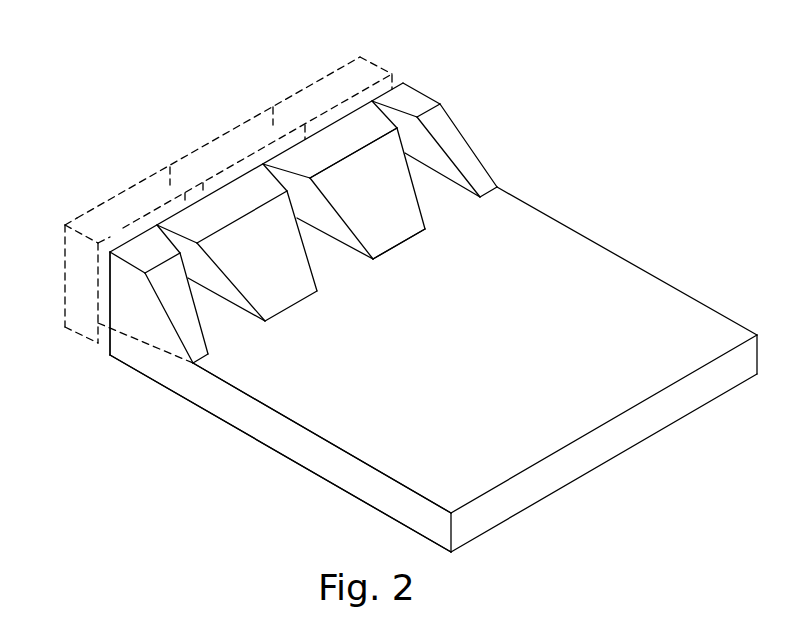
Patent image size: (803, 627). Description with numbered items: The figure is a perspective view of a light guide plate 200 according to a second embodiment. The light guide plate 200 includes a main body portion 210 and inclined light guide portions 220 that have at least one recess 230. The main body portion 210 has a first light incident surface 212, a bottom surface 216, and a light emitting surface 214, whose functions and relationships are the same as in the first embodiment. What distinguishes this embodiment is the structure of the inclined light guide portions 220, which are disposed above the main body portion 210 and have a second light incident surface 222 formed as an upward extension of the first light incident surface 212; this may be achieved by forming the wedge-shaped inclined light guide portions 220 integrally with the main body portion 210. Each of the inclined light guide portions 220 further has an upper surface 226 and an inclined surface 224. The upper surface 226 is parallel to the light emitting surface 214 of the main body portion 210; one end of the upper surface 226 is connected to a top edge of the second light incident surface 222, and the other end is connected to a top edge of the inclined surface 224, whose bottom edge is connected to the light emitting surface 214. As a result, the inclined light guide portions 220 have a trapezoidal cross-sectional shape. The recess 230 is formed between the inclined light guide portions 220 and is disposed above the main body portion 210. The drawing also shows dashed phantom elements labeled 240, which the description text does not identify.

The light guide plate 200 is at (740, 73).
The main body portion 210 is at (411, 369).
The first light incident surface 212 is at (110, 327).
The light emitting surface 214 is at (600, 287).
The bottom surface 216 is at (227, 423).
The inclined light guide portions 220 is at (336, 191).
The second light incident surface 222 is at (112, 283).
The inclined surface 224 is at (378, 233).
The upper surface 226 is at (413, 100).
The recess 230 is at (297, 192).
The phantom elements 240 is at (140, 197).